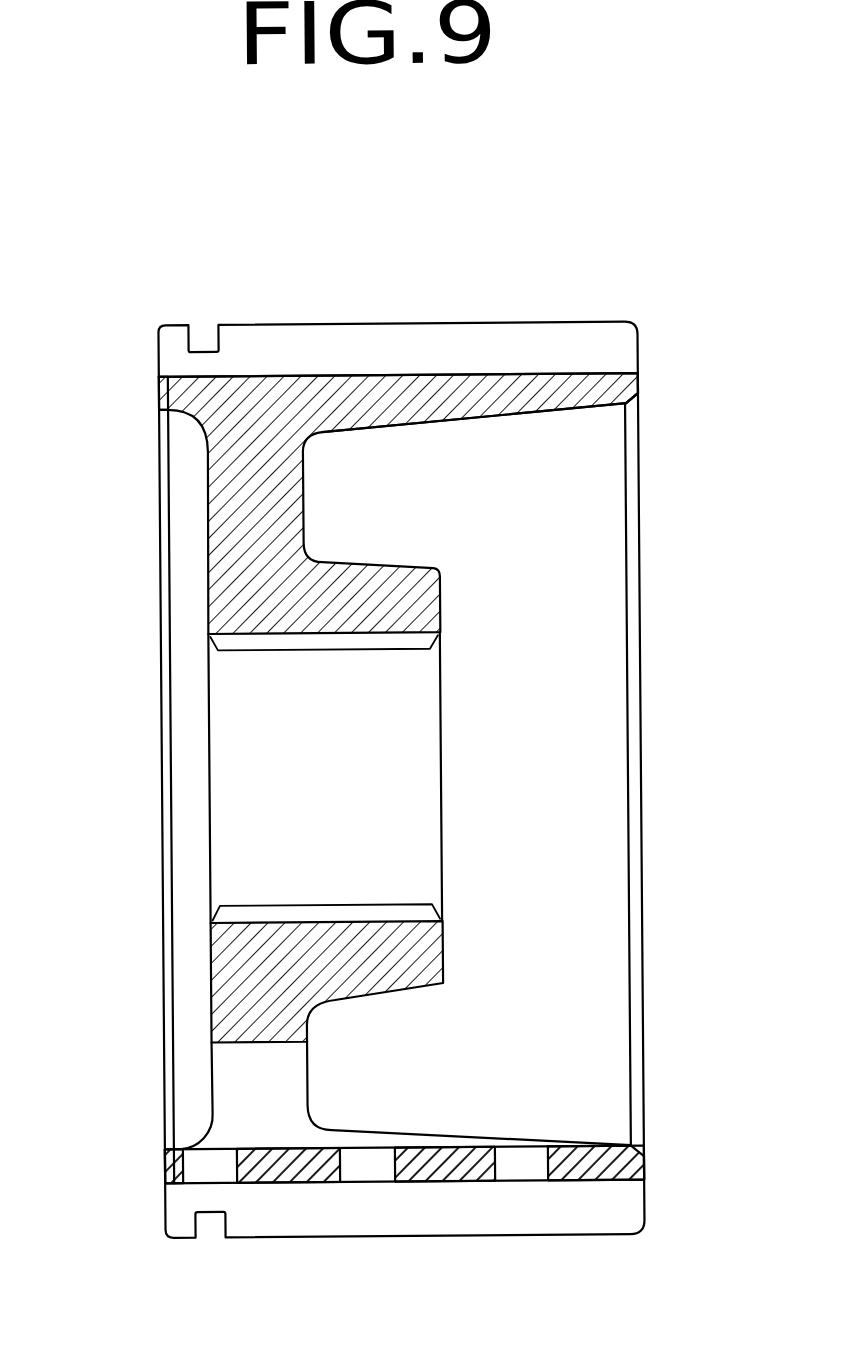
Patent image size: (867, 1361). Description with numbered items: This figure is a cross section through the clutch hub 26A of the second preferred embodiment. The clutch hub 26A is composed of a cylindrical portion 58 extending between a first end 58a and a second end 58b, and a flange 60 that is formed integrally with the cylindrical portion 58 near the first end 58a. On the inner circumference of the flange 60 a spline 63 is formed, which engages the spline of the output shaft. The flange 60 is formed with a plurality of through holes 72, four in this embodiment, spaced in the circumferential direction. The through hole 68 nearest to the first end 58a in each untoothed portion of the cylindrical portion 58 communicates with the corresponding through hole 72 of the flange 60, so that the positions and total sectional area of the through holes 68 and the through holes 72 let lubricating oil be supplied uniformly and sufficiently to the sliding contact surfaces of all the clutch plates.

The clutch hub 26A is at (486, 321).
The cylindrical portion 58 is at (371, 375).
The first end 58a is at (163, 390).
The second end 58b is at (642, 384).
The flange 60 is at (219, 491).
The spline 63 is at (357, 638).
The through hole 72 is at (288, 1071).
The through hole 68 is at (195, 1162).